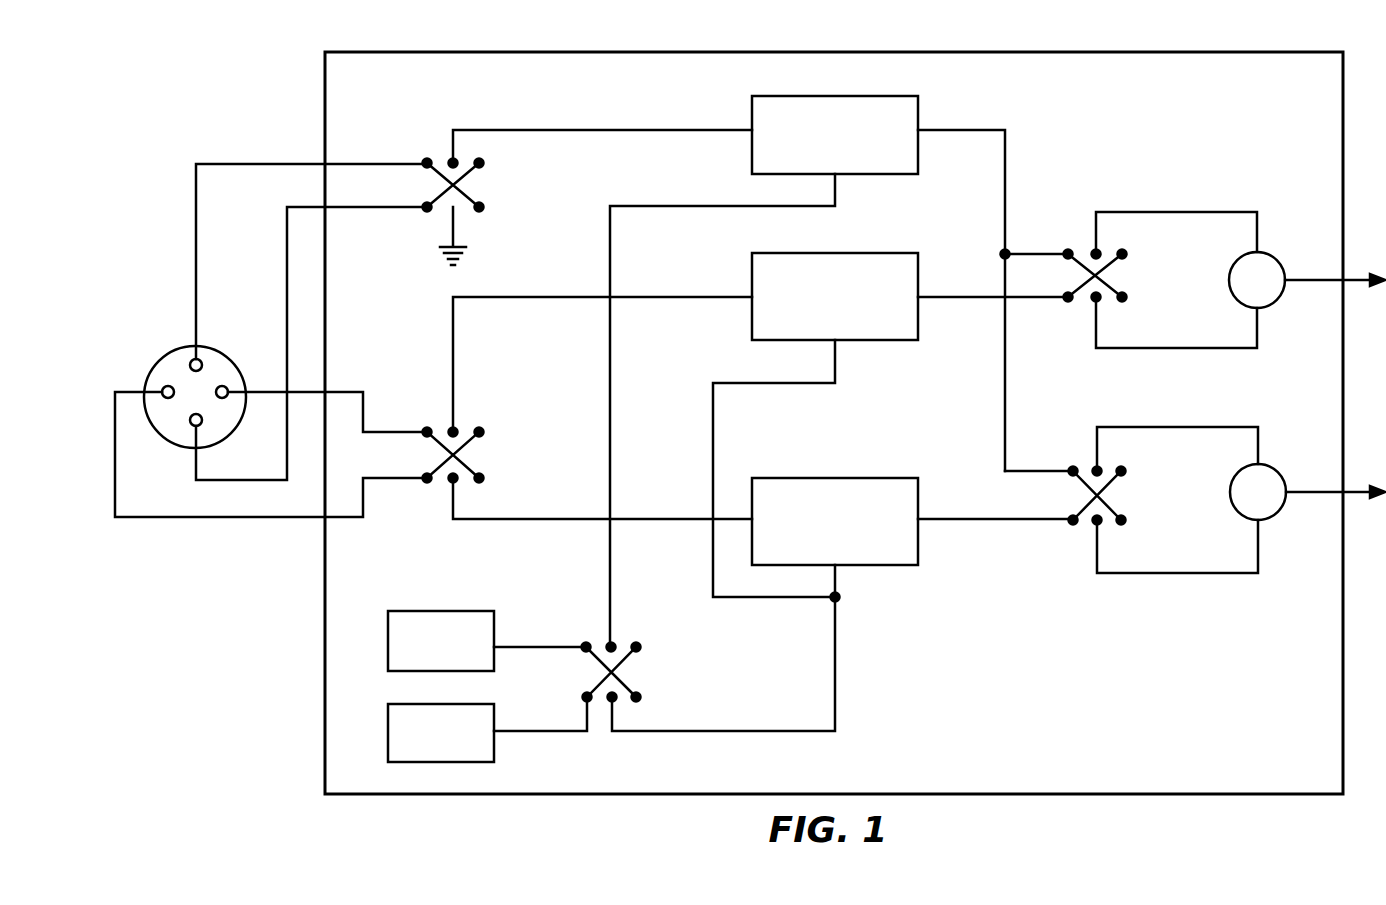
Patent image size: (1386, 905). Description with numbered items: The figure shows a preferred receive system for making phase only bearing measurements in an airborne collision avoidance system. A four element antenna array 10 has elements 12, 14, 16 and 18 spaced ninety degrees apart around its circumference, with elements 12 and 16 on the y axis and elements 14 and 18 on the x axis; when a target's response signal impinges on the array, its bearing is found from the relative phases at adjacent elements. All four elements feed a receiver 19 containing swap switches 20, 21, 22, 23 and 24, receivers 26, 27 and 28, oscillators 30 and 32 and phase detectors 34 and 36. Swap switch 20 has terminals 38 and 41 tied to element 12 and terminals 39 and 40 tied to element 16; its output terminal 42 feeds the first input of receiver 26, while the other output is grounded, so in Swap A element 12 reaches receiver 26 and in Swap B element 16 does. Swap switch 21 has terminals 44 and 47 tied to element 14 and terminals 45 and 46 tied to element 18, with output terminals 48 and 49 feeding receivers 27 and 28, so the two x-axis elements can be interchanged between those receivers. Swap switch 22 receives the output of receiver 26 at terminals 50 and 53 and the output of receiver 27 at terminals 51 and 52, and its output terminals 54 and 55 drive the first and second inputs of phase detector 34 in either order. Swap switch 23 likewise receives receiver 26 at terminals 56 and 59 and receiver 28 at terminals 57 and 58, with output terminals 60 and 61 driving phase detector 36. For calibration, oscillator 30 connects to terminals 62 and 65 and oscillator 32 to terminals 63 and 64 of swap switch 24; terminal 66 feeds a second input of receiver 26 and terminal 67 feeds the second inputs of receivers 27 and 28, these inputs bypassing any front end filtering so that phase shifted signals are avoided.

The antenna array 10 is at (178, 350).
The antenna element 12 is at (201, 360).
The antenna element 14 is at (225, 398).
The antenna element 16 is at (193, 426).
The antenna element 18 is at (164, 388).
The receiver 19 is at (325, 90).
The swap switch 20 is at (564, 176).
The swap switch 21 is at (559, 410).
The swap switch 22 is at (1131, 279).
The swap switch 23 is at (1131, 498).
The swap switch 24 is at (620, 676).
The receiver 26 is at (920, 102).
The receiver 27 is at (880, 252).
The receiver 28 is at (856, 477).
The oscillator 30 is at (440, 611).
The oscillator 32 is at (388, 730).
The phase detector 34 is at (1276, 258).
The phase detector 36 is at (1280, 476).
The terminal 38 is at (427, 160).
The terminal 39 is at (427, 210).
The terminal 40 is at (482, 163).
The terminal 41 is at (482, 208).
The output terminal 42 is at (453, 160).
The terminal 44 is at (427, 430).
The terminal 45 is at (425, 476).
The terminal 46 is at (481, 430).
The terminal 47 is at (482, 479).
The output terminal 48 is at (455, 430).
The output terminal 49 is at (452, 481).
The terminal 50 is at (1068, 250).
The terminal 51 is at (1066, 295).
The terminal 52 is at (1125, 254).
The terminal 53 is at (1125, 299).
The output terminal 54 is at (1098, 252).
The output terminal 55 is at (1095, 300).
The terminal 56 is at (1073, 468).
The terminal 57 is at (1071, 517).
The terminal 58 is at (1124, 471).
The terminal 59 is at (1124, 521).
The output terminal 60 is at (1099, 469).
The output terminal 61 is at (1095, 523).
The terminal 62 is at (584, 645).
The terminal 63 is at (584, 696).
The terminal 64 is at (638, 645).
The terminal 65 is at (640, 697).
The terminal 66 is at (612, 645).
The terminal 67 is at (608, 701).